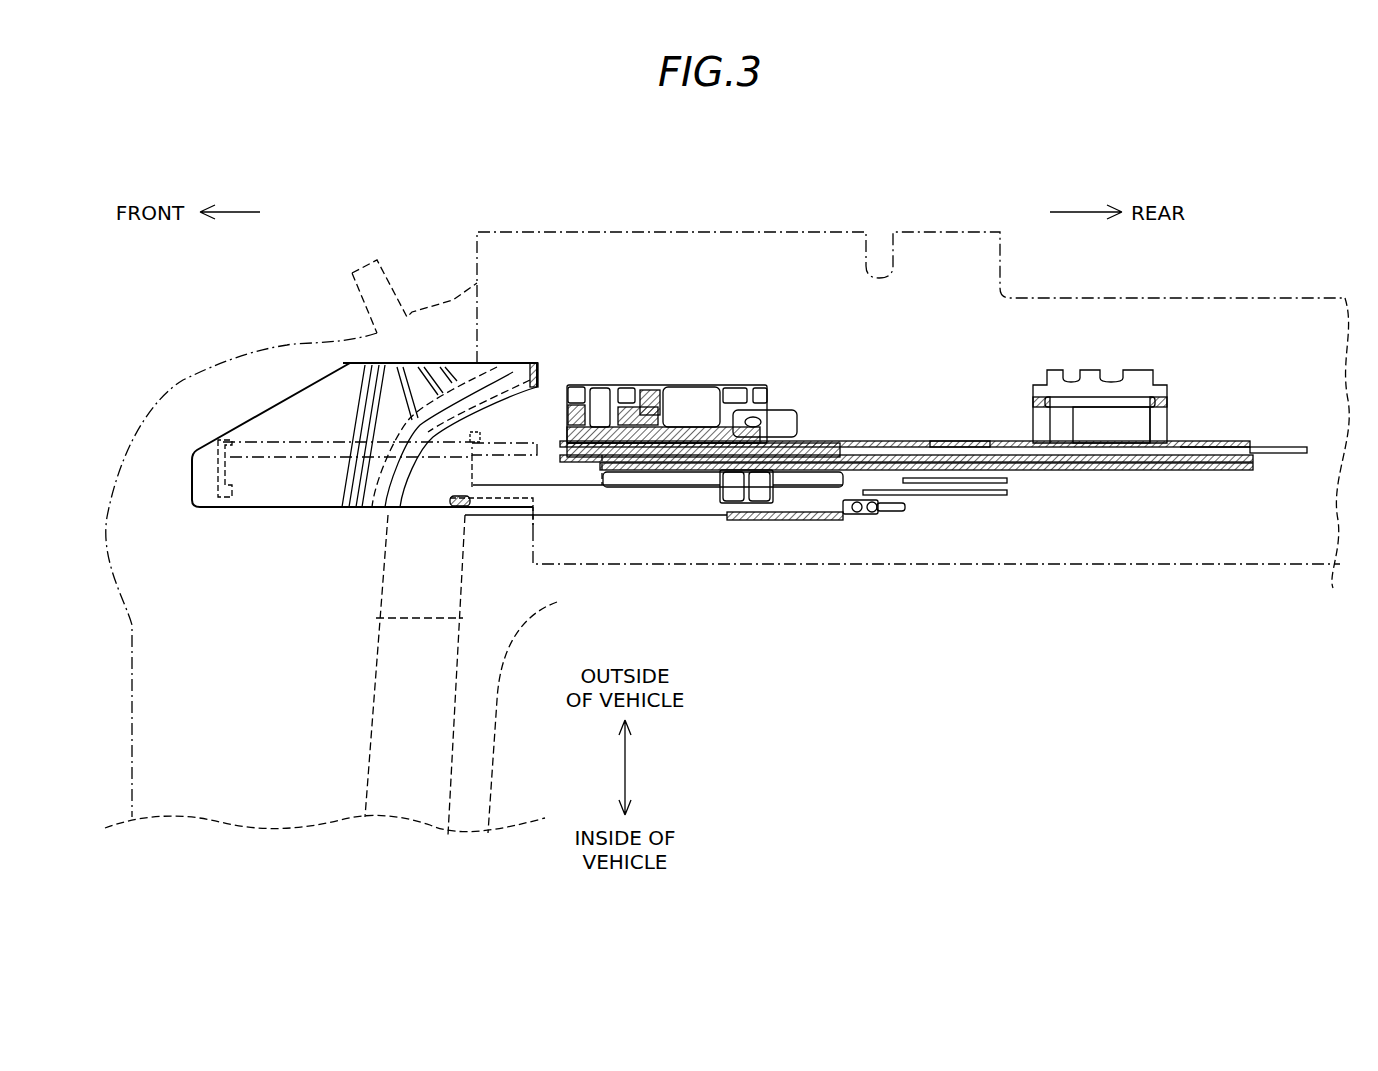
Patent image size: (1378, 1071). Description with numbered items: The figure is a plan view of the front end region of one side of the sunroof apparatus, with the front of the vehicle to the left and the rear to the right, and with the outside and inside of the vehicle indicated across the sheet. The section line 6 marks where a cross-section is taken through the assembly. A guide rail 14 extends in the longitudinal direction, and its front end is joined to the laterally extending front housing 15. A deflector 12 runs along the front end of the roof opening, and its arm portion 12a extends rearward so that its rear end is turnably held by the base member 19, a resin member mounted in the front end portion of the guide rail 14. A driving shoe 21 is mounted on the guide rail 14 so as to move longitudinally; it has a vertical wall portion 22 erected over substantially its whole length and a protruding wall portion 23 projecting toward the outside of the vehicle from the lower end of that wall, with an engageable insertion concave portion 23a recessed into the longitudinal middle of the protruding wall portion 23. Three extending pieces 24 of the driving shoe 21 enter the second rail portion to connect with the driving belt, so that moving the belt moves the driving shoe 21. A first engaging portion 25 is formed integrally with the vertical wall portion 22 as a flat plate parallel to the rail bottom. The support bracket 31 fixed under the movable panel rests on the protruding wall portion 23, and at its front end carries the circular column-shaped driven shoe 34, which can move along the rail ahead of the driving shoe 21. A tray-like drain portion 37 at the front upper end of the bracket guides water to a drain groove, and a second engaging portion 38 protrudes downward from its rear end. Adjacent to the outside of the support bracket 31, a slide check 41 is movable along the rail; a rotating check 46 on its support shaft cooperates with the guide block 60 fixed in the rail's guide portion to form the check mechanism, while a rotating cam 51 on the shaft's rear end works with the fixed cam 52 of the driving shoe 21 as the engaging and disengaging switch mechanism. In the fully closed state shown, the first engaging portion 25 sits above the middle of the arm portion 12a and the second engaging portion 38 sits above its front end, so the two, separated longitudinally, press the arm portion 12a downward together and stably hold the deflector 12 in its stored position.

The section line of FIG. 6 is at (760, 210).
The deflector 12 is at (367, 713).
The arm portion 12a is at (694, 503).
The guide rail 14 is at (1245, 297).
The front housing 15 is at (170, 388).
The base member 19 is at (880, 517).
The driving shoe 21 is at (1063, 483).
The vertical wall portion 22 is at (1040, 472).
The protruding wall portion 23 is at (908, 440).
The engageable insertion concave portion 23a is at (945, 442).
The extending pieces 24 is at (1100, 368).
The first engaging portion 25 is at (737, 510).
The support bracket 31 is at (1268, 442).
The driven shoe 34 is at (225, 503).
The drain portion 37 is at (453, 363).
The second engaging portion 38 is at (485, 446).
The slide check 41 is at (576, 385).
The rotating check 46 is at (673, 423).
The rotating cam 51 is at (770, 410).
The fixed cam 52 is at (1123, 433).
The guide block 60 is at (606, 386).